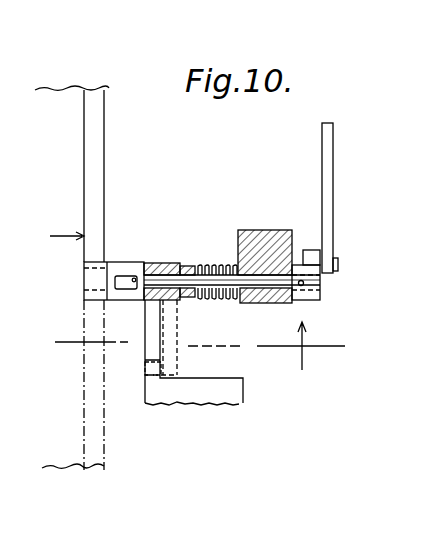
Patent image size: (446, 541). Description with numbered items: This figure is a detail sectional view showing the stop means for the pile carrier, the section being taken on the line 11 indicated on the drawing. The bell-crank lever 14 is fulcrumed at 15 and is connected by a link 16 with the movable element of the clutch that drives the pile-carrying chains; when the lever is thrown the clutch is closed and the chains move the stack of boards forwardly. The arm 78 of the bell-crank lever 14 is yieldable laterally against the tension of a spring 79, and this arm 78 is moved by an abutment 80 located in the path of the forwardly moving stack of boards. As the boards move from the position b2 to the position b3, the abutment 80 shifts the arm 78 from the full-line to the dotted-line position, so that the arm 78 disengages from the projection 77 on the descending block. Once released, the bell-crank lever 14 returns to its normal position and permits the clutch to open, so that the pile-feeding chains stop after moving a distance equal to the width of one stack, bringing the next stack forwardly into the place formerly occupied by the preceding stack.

The abutment 80 is at (97, 268).
The spring 79 is at (179, 269).
The bell-crank lever 14 is at (312, 252).
The fulcrum 15 is at (256, 304).
The link 16 is at (330, 212).
The arm 78 is at (145, 345).
The projection 77 is at (165, 372).
The bevel gear 11 is at (202, 346).
The board position b2 is at (82, 459).
The board position b3 is at (104, 461).